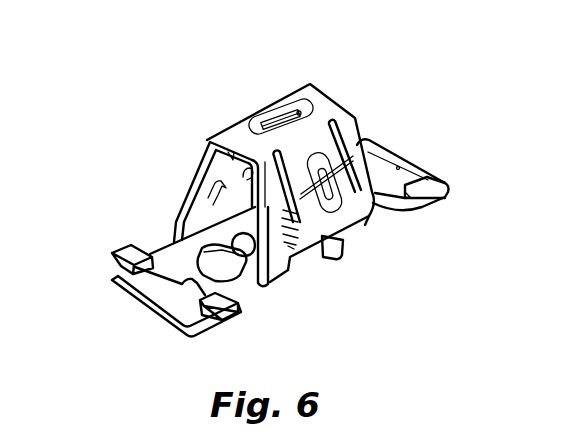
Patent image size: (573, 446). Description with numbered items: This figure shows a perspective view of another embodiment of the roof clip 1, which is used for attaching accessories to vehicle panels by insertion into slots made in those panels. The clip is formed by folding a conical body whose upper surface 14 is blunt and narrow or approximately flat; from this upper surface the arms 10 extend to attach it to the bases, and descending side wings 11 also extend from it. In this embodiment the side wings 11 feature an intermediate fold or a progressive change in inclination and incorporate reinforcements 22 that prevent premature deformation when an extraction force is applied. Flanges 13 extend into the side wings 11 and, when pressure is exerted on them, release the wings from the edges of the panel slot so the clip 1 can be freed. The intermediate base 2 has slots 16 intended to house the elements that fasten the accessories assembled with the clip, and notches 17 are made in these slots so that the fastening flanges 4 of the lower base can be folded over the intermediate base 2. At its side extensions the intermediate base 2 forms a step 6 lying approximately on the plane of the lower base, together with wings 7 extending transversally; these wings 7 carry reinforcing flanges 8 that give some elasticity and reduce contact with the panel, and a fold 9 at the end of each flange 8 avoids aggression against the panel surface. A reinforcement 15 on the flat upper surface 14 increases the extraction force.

The clip 1 is at (223, 117).
The intermediate base 2 is at (238, 225).
The fastening flanges 4 is at (268, 280).
The step 6 is at (242, 273).
The wings 7 is at (393, 153).
The reinforcing flanges 8 is at (430, 182).
The fold 9 is at (114, 252).
The arms 10 is at (307, 250).
The side wings 11 is at (395, 217).
The flanges 13 is at (333, 245).
The upper surface 14 is at (313, 105).
The reinforcement 15 is at (289, 118).
The slots 16 is at (200, 260).
The notches 17 is at (225, 235).
The reinforcements 22 is at (342, 207).